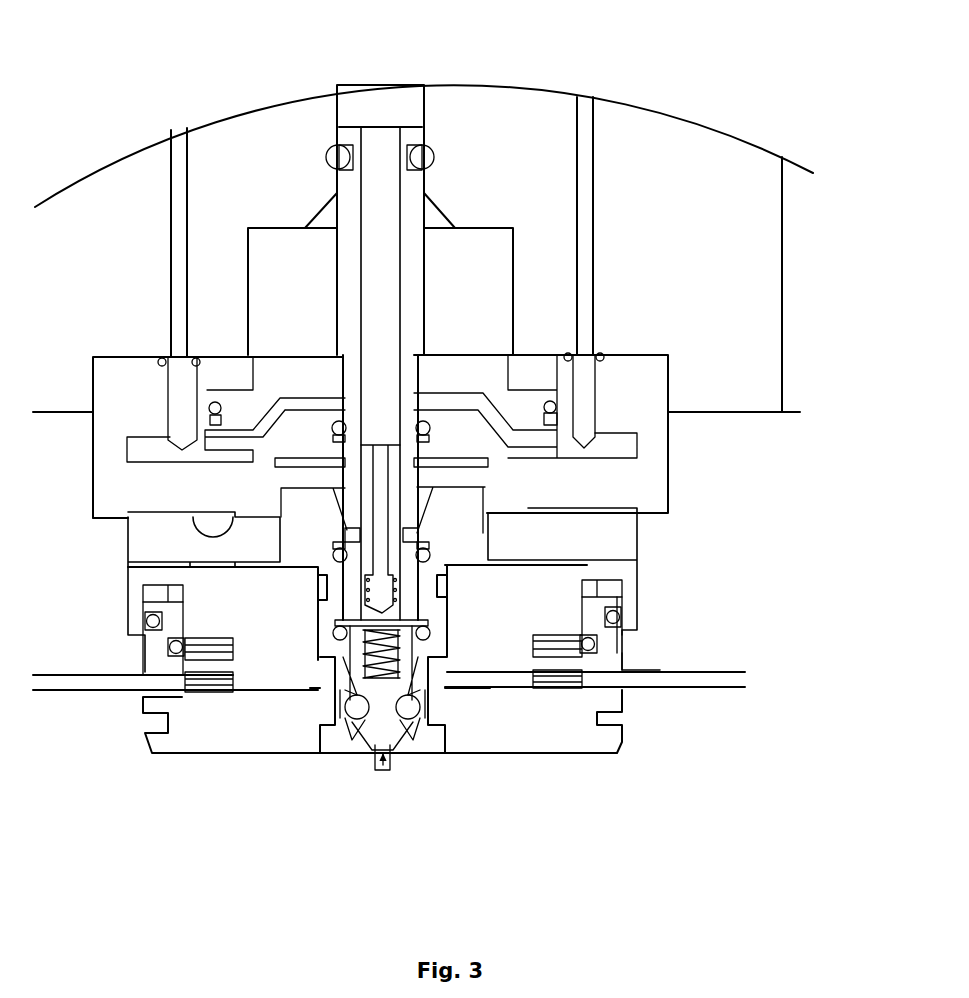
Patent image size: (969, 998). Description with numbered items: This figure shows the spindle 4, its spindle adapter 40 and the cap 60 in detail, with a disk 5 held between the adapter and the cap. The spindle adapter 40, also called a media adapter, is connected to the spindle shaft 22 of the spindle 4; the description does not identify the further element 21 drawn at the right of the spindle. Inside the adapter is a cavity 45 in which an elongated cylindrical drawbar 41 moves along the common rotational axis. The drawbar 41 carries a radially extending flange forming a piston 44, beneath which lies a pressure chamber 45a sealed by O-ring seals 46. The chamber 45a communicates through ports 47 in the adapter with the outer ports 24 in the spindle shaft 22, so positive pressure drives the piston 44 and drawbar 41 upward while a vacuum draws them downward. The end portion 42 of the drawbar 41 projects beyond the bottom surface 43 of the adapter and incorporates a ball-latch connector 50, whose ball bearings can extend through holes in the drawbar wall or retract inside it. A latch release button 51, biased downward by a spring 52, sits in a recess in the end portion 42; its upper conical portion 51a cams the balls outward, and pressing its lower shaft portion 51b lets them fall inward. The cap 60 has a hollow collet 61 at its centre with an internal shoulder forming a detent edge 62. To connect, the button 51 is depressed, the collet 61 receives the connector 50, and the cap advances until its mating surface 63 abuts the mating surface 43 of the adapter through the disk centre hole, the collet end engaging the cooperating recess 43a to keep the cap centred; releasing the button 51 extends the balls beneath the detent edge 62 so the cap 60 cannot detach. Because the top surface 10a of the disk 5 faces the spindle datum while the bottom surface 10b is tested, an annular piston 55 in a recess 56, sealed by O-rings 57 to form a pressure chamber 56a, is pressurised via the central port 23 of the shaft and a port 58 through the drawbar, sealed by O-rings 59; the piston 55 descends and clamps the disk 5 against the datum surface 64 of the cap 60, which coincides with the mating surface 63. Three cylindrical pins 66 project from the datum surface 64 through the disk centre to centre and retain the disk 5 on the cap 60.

The spindle 4 is at (825, 72).
The disk 5 is at (740, 679).
The top surface of the disk 10a is at (665, 670).
The bottom surface of the disk 10b is at (665, 690).
The casing wall 21 is at (802, 192).
The spindle shaft 22 is at (643, 155).
The central port 23 is at (385, 150).
The outer ports 24 is at (583, 133).
The spindle adapter 40 is at (825, 415).
The drawbar 41 is at (413, 190).
The end portion of the drawbar 42 is at (367, 742).
The bottom surface of the spindle adapter 43 is at (333, 660).
The cooperating recess 43a is at (318, 702).
The piston 44 is at (472, 378).
The cavity 45 is at (288, 262).
The pressure chamber 45a is at (302, 412).
The O-ring seals 46 is at (554, 409).
The ports 47 is at (604, 449).
The ball-latch connector 50 is at (455, 650).
The latch release button 51 is at (452, 768).
The upper conical portion 51a is at (392, 753).
The lower shaft portion 51b is at (385, 772).
The spring 52 is at (402, 666).
The annular piston 55 is at (155, 667).
The recess 56 is at (150, 583).
The pressure chamber 56a is at (150, 594).
The O-rings 57 is at (170, 647).
The port 58 is at (385, 552).
The O-rings 59 is at (338, 630).
The cap 60 is at (825, 690).
The hollow collet 61 is at (357, 742).
The detent edge 62 is at (366, 748).
The mating surface of the cap 63 is at (320, 676).
The datum surface 64 is at (160, 708).
The cylindrical pins 66 is at (205, 694).